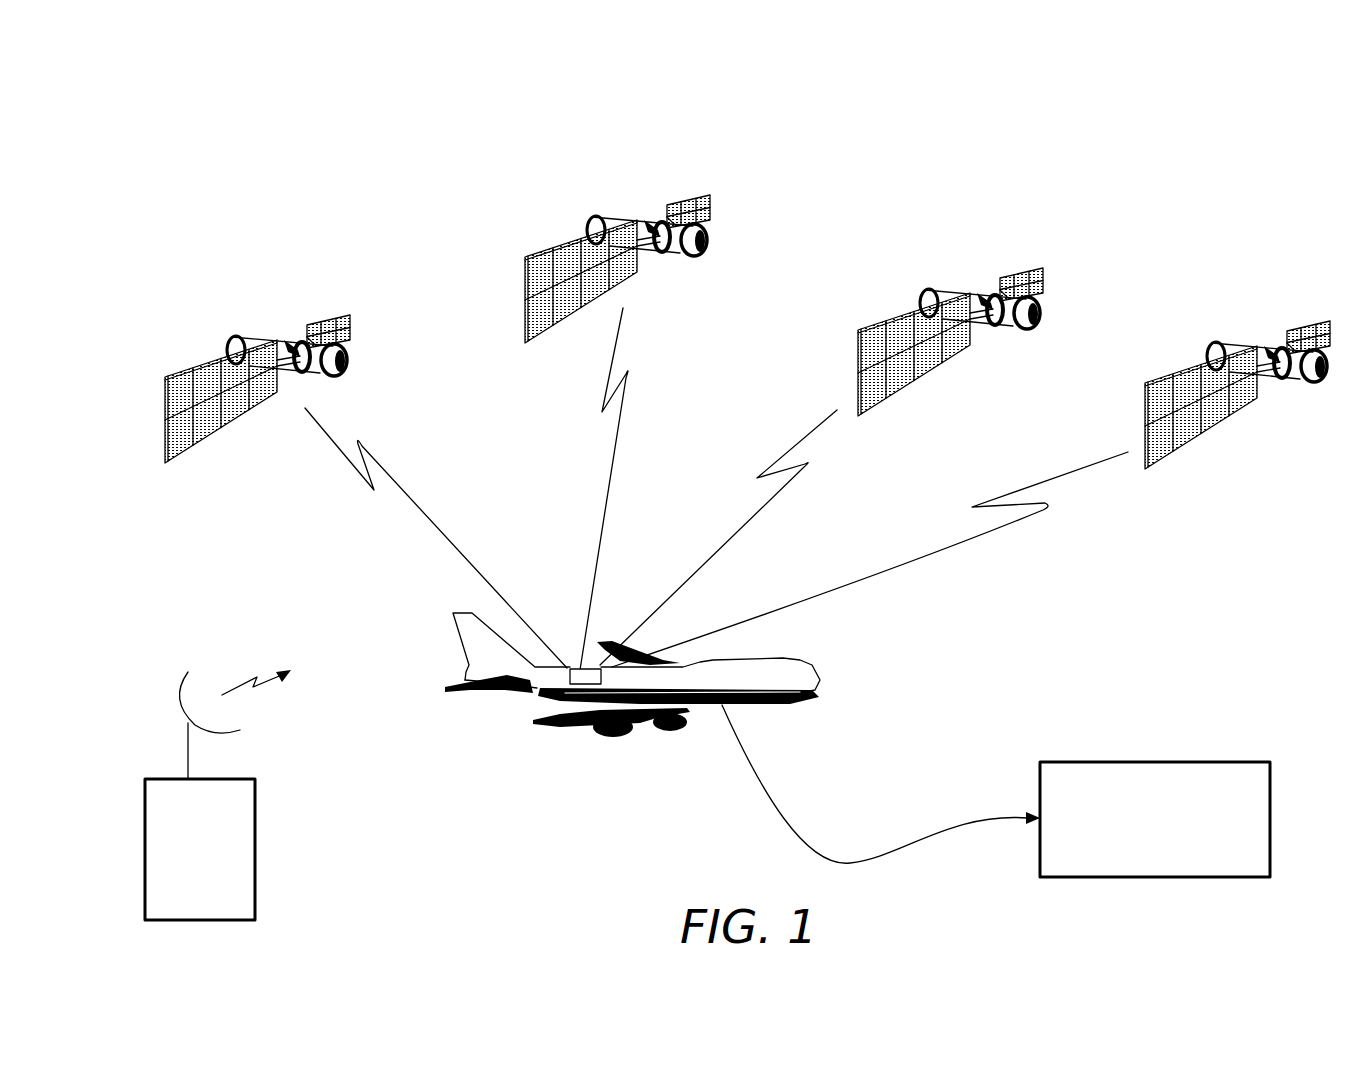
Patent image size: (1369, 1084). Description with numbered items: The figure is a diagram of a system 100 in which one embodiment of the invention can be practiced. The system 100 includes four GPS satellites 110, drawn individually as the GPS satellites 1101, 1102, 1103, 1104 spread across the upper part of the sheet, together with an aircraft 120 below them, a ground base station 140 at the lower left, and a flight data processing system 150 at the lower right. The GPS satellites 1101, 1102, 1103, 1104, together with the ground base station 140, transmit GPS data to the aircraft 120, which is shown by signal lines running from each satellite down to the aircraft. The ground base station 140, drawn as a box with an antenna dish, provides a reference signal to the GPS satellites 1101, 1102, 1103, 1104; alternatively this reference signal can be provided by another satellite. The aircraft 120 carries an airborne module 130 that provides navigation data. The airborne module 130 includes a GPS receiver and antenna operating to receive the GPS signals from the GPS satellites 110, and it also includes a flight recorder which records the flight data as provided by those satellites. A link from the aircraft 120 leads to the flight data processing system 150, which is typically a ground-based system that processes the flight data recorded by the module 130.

The system 100 is at (1236, 140).
The GPS satellites 110 is at (747, 420).
The GPS satellite 1101 is at (260, 338).
The GPS satellite 1102 is at (620, 218).
The GPS satellite 1103 is at (953, 291).
The GPS satellite 1104 is at (1240, 344).
The aircraft 120 is at (467, 627).
The airborne module 130 is at (568, 692).
The ground base station 140 is at (242, 862).
The flight data processing system 150 is at (1245, 773).